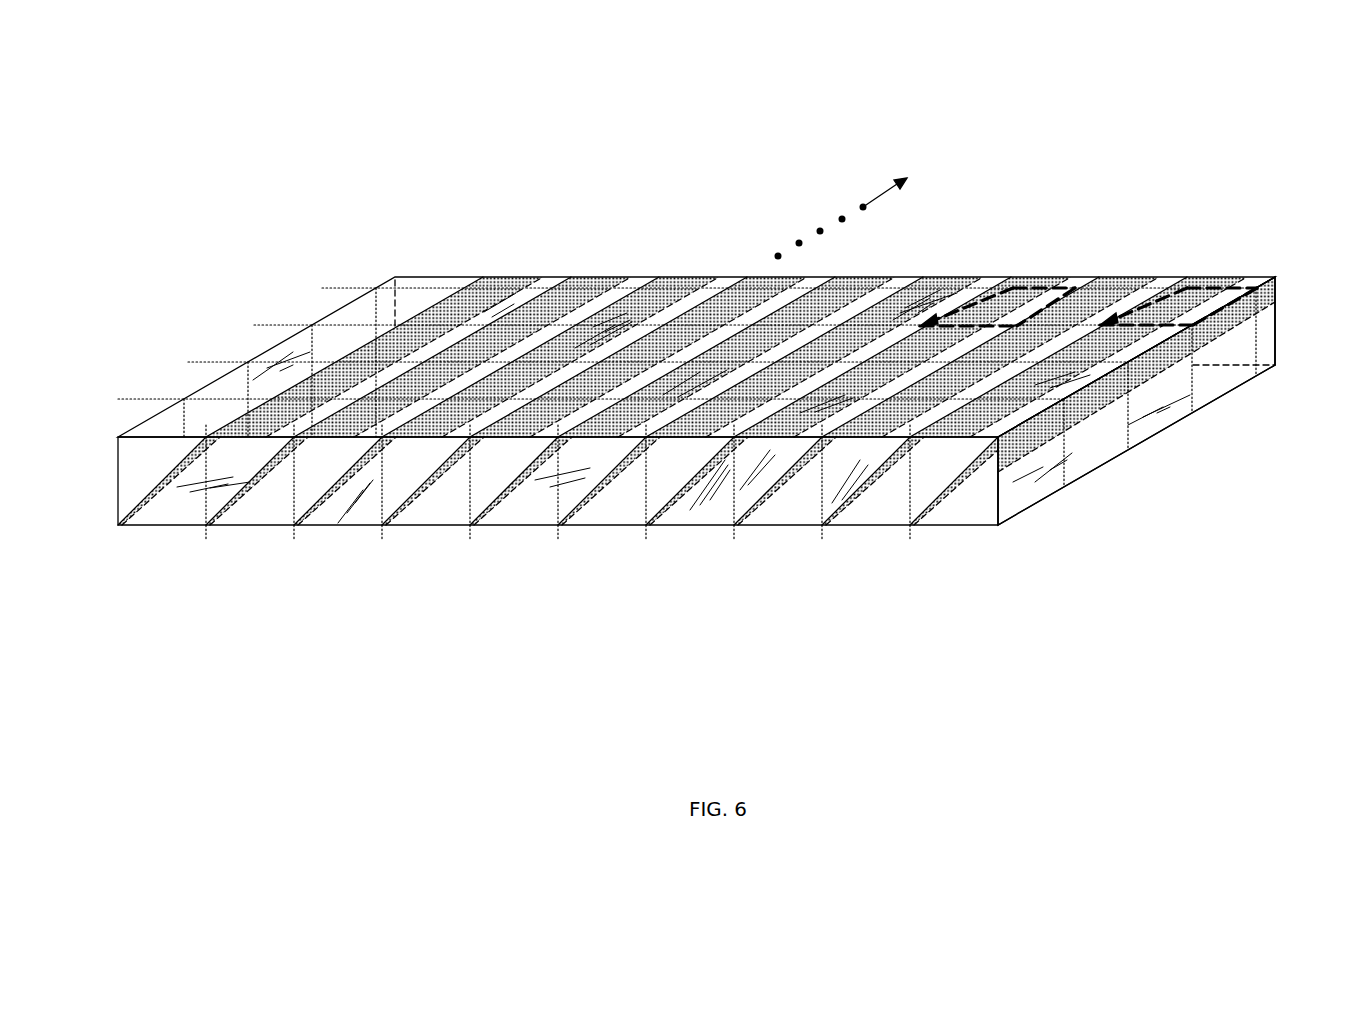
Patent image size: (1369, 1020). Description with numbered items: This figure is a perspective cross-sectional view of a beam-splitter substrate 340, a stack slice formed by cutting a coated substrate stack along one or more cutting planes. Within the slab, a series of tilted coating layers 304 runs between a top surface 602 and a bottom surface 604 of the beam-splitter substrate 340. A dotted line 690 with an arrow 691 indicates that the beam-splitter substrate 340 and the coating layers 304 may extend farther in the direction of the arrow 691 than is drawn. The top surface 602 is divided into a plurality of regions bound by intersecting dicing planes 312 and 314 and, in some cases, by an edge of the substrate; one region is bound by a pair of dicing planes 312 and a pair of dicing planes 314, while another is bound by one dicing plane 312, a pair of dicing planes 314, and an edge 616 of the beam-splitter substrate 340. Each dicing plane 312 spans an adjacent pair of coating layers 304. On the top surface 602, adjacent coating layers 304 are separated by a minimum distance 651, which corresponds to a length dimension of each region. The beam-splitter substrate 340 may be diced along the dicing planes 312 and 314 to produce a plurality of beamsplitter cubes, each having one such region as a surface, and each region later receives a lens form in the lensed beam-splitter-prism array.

The beam-splitter substrate 340 is at (272, 150).
The dicing planes 314 is at (330, 287).
The coating layers 304 is at (462, 305).
The dicing planes 312 is at (673, 570).
The dotted line 690 is at (752, 234).
The arrow 691 is at (860, 200).
The top surface 602 is at (938, 287).
The minimum distance 651 is at (1012, 278).
The edge 616 is at (1279, 286).
The bottom surface 604 is at (1108, 446).